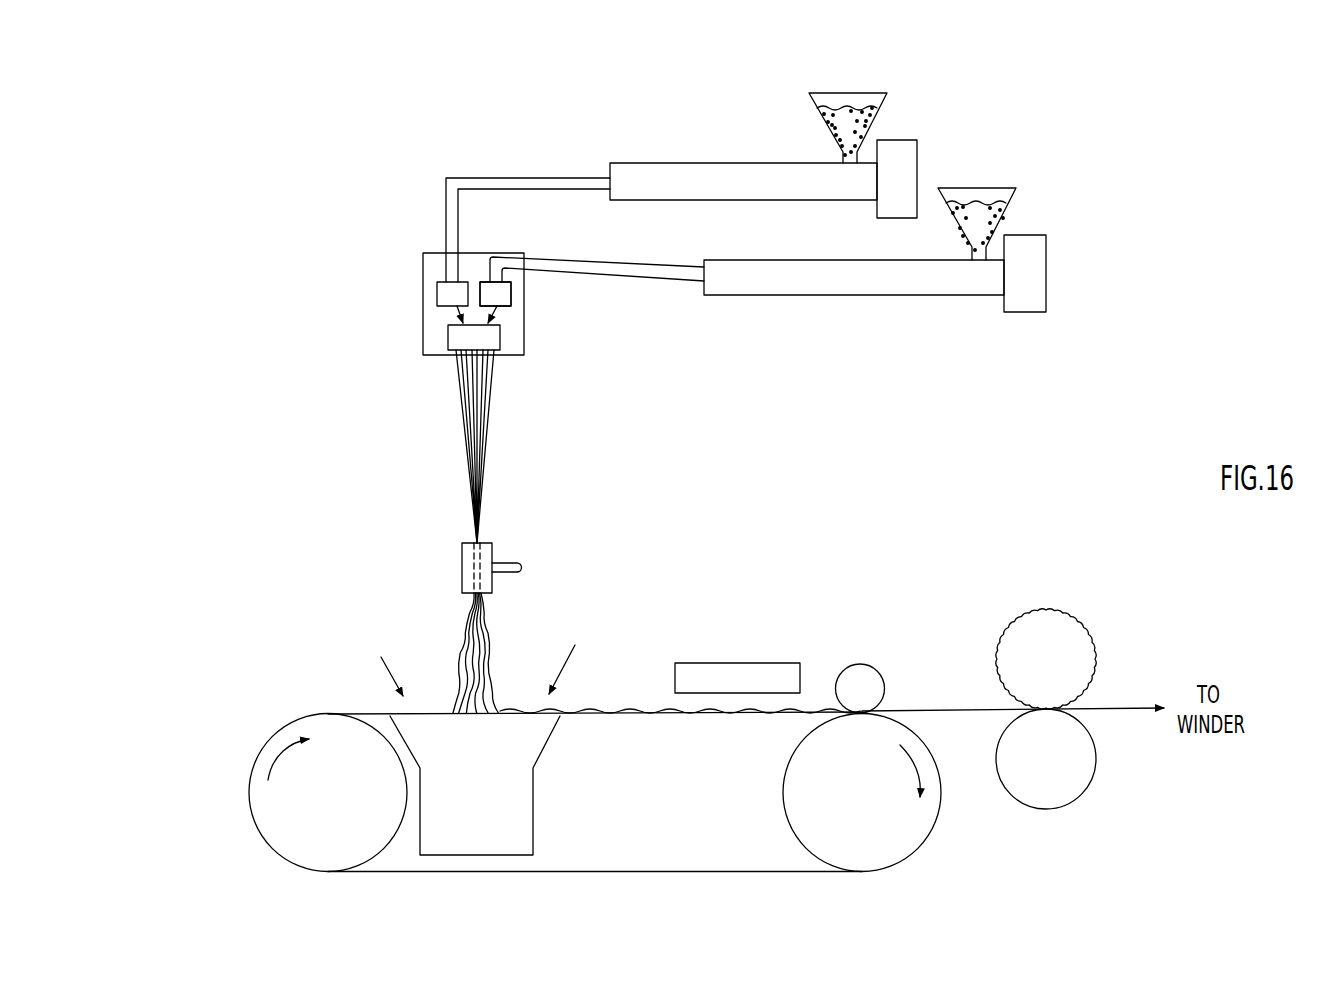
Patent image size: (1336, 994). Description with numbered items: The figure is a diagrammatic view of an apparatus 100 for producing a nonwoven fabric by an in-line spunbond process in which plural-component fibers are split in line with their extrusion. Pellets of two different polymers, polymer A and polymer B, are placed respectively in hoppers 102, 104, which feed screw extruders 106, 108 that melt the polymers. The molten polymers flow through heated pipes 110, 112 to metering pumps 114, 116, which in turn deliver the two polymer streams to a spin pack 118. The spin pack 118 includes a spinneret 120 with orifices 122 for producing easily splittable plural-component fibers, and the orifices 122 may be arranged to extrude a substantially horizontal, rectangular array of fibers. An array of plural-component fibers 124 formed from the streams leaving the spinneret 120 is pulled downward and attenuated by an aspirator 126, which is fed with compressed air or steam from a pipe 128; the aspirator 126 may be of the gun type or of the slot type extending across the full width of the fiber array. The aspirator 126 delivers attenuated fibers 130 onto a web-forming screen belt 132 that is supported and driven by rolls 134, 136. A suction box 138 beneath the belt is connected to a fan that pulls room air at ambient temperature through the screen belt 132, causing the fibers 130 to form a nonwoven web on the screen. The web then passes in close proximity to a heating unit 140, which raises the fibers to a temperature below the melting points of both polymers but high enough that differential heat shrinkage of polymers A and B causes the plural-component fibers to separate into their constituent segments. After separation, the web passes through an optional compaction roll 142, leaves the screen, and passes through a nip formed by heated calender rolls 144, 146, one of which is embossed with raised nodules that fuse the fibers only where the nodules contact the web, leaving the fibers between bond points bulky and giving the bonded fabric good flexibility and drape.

The apparatus 100 is at (880, 485).
The hopper 102 is at (873, 121).
The hopper 104 is at (998, 226).
The screw extruder 106 is at (766, 192).
The screw extruder 108 is at (878, 287).
The heated pipe 110 is at (523, 177).
The heated pipe 112 is at (612, 264).
The metering pump 114 is at (437, 293).
The metering pump 116 is at (511, 295).
The spin pack 118 is at (495, 340).
The spinneret 120 is at (453, 355).
The orifices 122 is at (492, 358).
The plural-component fibers 124 is at (490, 393).
The aspirator 126 is at (492, 548).
The pipe 128 is at (505, 577).
The attenuated fibers 130 is at (490, 654).
The web-forming screen belt 132 is at (600, 708).
The roll 134 is at (387, 843).
The roll 136 is at (818, 856).
The suction box 138 is at (518, 822).
The heating unit 140 is at (753, 692).
The compaction roll 142 is at (868, 665).
The heated calender roll 144 is at (1046, 659).
The heated calender roll 146 is at (1046, 759).